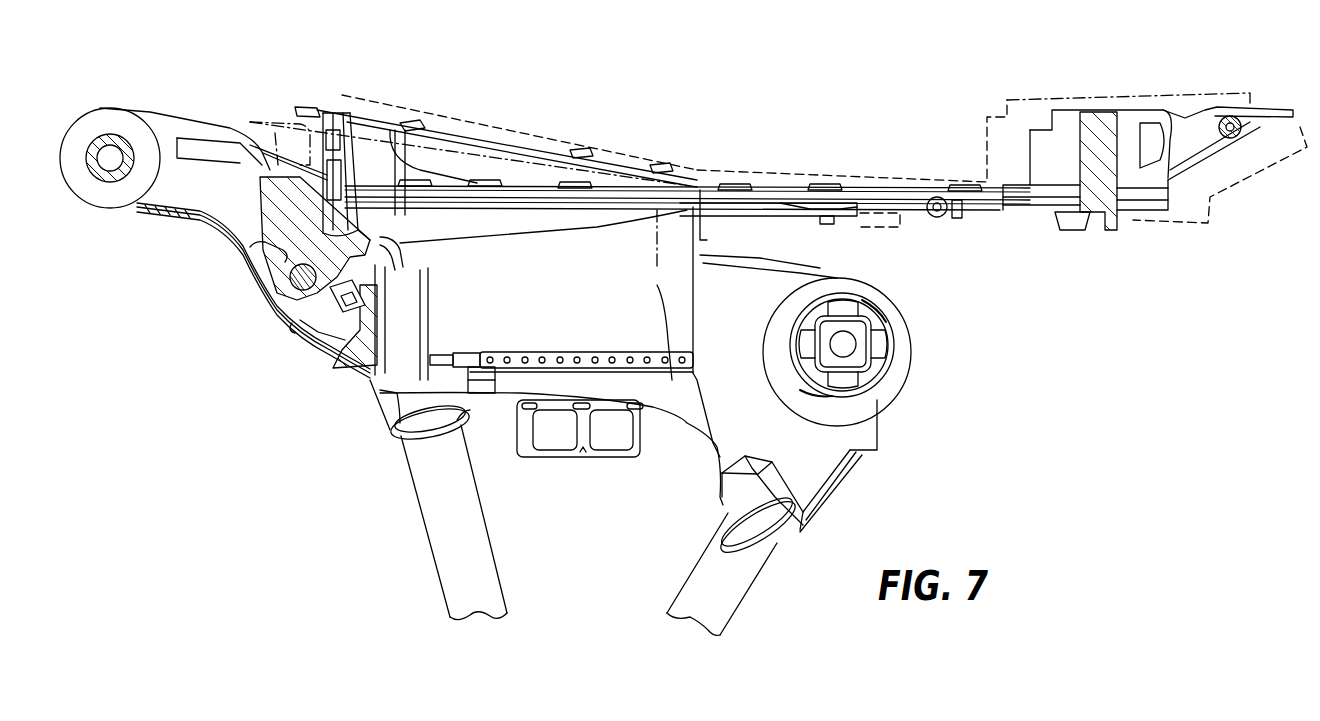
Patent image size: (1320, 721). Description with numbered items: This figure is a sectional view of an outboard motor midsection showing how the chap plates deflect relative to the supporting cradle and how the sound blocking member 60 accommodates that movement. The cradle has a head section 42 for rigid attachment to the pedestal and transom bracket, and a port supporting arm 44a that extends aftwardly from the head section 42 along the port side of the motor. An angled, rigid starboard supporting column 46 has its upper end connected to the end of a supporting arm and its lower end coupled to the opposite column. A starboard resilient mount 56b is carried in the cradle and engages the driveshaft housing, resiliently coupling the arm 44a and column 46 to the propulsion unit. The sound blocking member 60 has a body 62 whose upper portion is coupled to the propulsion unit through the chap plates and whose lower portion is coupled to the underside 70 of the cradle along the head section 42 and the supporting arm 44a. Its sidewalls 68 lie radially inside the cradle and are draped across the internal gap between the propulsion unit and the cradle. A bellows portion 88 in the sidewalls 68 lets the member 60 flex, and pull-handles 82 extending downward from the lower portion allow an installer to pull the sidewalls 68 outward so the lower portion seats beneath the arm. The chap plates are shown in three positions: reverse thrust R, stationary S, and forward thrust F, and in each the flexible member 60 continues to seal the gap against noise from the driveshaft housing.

The head section 42 is at (172, 263).
The port supporting arm 44a is at (542, 376).
The starboard supporting column 46 is at (447, 567).
The starboard resilient mount 56b is at (888, 331).
The sound blocking member 60 is at (657, 285).
The body 62 is at (573, 306).
The sidewalls 68 is at (480, 297).
The underside of the supporting cradle 70 is at (477, 405).
The pull-handles 82 is at (587, 472).
The bellows portion 88 is at (573, 241).
The reverse thrust position R is at (245, 112).
The stationary position S is at (296, 100).
The forward thrust position F is at (348, 92).